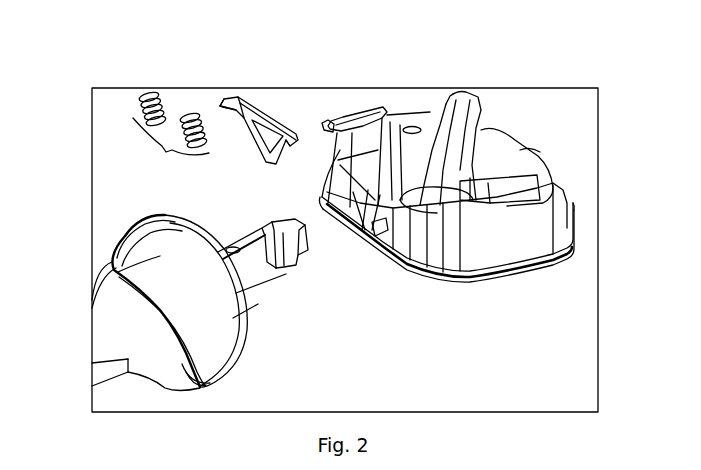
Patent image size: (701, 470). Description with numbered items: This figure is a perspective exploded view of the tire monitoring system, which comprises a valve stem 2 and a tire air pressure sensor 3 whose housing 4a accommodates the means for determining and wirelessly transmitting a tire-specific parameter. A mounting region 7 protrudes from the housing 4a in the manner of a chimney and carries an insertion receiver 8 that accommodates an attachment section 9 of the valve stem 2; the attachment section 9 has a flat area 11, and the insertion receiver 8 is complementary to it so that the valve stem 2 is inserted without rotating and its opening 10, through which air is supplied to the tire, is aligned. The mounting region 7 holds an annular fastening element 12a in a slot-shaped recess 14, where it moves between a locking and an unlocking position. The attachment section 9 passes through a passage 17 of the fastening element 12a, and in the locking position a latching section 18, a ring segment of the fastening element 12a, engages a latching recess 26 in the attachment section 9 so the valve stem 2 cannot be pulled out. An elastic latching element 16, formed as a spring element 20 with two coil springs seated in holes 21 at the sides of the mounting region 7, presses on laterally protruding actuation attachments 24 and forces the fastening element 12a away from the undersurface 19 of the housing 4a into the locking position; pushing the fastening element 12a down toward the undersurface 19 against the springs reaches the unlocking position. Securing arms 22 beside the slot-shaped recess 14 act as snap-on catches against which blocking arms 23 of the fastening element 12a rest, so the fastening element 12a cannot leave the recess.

The valve stem 2 is at (113, 236).
The tire air pressure sensor 3 is at (527, 133).
The housing 4a is at (500, 278).
The mounting region 7 is at (353, 103).
The insertion receiver 8 is at (335, 233).
The attachment section 9 is at (245, 232).
The opening 10 is at (180, 226).
The flat area 11 is at (301, 258).
The fastening element 12a is at (284, 113).
The slot-shaped recess 14 is at (348, 128).
The elastic latching element 16 is at (171, 144).
The passage 17 is at (267, 128).
The latching section 18 is at (272, 150).
The undersurface 19 is at (479, 282).
The spring element 20 is at (148, 93).
The holes 21 is at (408, 138).
The securing arms 22 is at (333, 132).
The blocking arms 23 is at (223, 106).
The actuation attachments 24 is at (247, 118).
The latching recess 26 is at (273, 263).